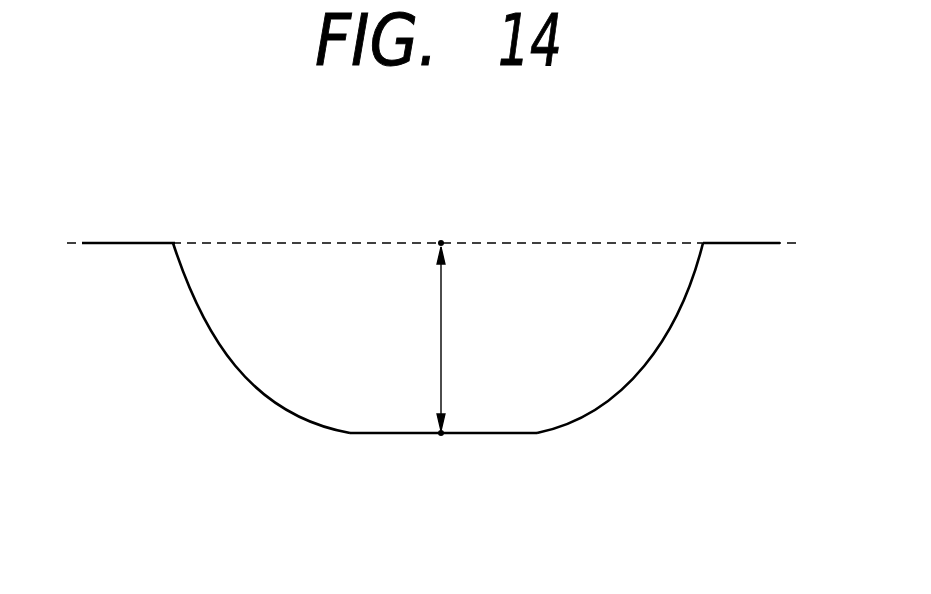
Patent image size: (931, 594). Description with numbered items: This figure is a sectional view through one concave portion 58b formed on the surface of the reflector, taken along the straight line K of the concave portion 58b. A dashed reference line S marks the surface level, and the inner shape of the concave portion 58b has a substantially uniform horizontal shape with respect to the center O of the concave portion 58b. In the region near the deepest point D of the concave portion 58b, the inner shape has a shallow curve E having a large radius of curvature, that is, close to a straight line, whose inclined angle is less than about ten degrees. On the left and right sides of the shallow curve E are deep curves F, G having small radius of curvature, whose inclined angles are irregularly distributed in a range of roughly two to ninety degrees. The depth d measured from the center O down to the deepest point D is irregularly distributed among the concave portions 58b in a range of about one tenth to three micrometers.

The concave portion 58b is at (429, 352).
The surface (reference plane) S is at (738, 243).
The deep curve F is at (212, 342).
The deep curve G is at (640, 375).
The shallow curve E is at (398, 435).
The center O is at (440, 223).
The deepest point D is at (442, 453).
The depth d is at (450, 339).